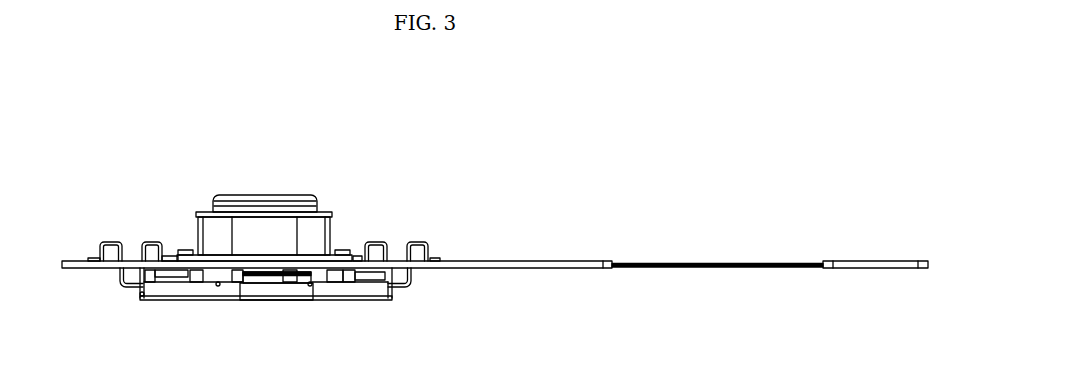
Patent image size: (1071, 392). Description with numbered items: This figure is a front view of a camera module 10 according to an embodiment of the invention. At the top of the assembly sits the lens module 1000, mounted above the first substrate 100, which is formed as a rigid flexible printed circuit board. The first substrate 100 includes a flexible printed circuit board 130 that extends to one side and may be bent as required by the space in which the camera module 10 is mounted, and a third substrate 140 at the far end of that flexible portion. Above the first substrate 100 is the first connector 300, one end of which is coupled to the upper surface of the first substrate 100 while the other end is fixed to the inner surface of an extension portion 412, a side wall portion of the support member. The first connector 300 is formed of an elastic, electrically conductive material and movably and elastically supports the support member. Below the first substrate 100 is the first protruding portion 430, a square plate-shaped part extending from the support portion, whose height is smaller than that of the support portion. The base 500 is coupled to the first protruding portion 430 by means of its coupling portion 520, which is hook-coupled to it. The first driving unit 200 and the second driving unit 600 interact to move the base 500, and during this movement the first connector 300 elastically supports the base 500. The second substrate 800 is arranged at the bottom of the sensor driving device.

The camera module 10 is at (832, 88).
The first substrate 100 is at (582, 261).
The flexible printed circuit board 130 is at (746, 262).
The third substrate 140 is at (885, 262).
The first driving unit 200 is at (143, 273).
The first connector 300 is at (424, 242).
The extension portion 412 is at (169, 257).
The first protruding portion 430 is at (239, 279).
The base 500 is at (378, 290).
The coupling portion 520 is at (263, 286).
The second driving unit 600 is at (140, 297).
The second substrate 800 is at (366, 300).
The lens module 1000 is at (294, 203).